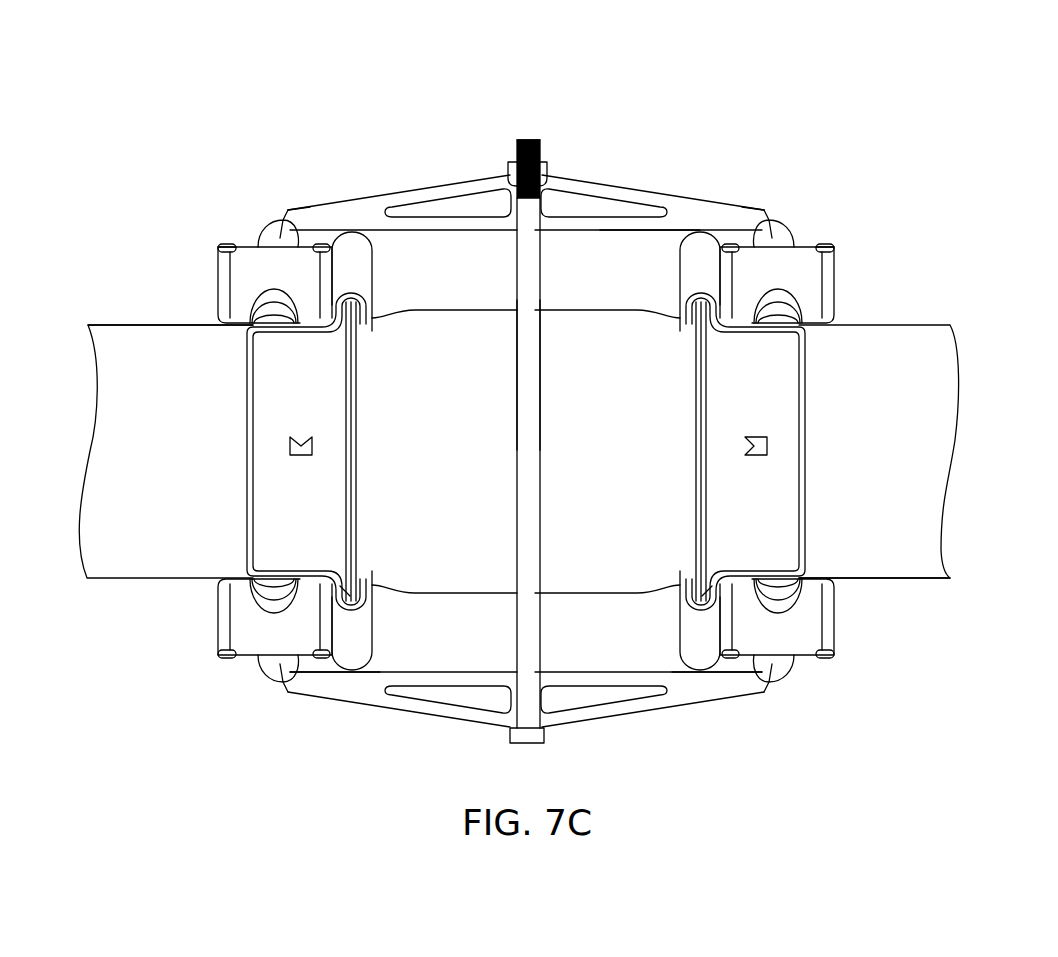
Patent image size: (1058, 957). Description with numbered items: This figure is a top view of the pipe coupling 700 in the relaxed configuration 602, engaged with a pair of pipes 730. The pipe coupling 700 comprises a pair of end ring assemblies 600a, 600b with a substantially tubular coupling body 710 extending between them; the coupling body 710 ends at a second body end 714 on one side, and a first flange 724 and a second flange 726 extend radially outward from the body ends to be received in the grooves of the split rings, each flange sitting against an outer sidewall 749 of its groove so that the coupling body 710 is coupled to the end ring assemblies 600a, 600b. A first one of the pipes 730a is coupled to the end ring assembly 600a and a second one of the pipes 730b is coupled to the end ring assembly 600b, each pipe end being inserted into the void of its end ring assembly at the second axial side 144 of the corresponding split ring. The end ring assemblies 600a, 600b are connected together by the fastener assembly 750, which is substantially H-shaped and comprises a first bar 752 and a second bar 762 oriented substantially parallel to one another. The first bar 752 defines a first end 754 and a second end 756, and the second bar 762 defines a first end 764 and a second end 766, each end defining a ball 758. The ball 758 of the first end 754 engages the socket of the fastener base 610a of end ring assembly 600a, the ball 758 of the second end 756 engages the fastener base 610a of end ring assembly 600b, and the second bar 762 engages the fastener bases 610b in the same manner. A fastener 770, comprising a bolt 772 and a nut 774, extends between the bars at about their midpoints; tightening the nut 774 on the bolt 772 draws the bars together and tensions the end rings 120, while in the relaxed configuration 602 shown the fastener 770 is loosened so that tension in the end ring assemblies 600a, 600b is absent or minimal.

The end ring 120 is at (347, 245).
The second axial side 144 is at (248, 495).
The end ring assembly 600a is at (180, 243).
The end ring assembly 600b is at (852, 268).
The relaxed configuration 602 is at (553, 108).
The fastener base 610a is at (237, 632).
The fastener base 610b is at (237, 280).
The pipe coupling 700 is at (653, 164).
The coupling body 710 is at (483, 350).
The second body end 714 is at (676, 385).
The first flange 724 is at (360, 385).
The second flange 726 is at (690, 445).
The pipes 730 is at (104, 305).
The pipe 730a is at (125, 387).
The pipe 730b is at (916, 570).
The outer sidewall 749 is at (345, 586).
The fastener assembly 750 is at (433, 190).
The first bar 752 is at (622, 722).
The first end 754 is at (300, 683).
The second end 756 is at (773, 685).
The ball 758 is at (283, 220).
The second bar 762 is at (620, 190).
The first end 764 is at (284, 218).
The second end 766 is at (773, 220).
The fastener 770 is at (494, 441).
The bolt 772 is at (542, 372).
The nut 774 is at (521, 140).